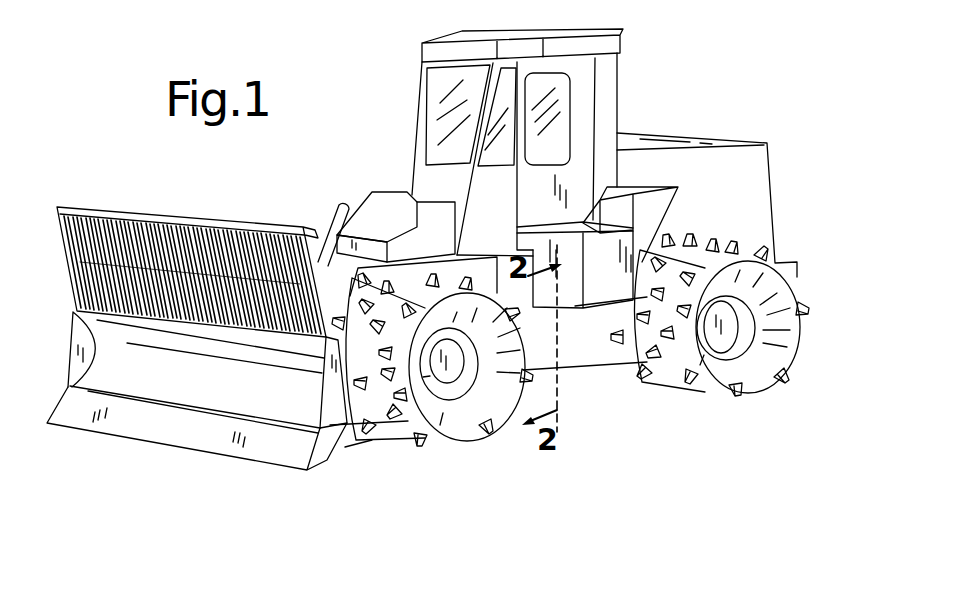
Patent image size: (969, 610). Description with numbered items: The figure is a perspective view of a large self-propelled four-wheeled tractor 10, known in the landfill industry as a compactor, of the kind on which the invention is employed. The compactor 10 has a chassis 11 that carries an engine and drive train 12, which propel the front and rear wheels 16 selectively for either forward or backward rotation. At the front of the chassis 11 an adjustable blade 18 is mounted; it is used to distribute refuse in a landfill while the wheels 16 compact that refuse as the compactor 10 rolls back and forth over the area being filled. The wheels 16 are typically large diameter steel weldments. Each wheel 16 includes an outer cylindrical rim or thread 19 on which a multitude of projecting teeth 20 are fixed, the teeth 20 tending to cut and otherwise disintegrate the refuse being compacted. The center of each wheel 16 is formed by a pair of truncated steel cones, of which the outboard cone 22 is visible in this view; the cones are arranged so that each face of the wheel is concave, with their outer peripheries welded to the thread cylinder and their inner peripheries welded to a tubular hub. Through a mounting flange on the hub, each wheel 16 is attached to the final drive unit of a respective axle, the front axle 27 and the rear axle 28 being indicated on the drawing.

The tractor 10 is at (652, 68).
The chassis 11 is at (413, 232).
The engine and drive train 12 is at (748, 173).
The wheel 16 is at (458, 444).
The adjustable blade 18 is at (178, 437).
The outer cylindrical rim or thread 19 is at (405, 428).
The projecting teeth 20 is at (420, 455).
The truncated steel cone 22 is at (492, 405).
The front axle 27 is at (458, 358).
The rear axle 28 is at (723, 347).